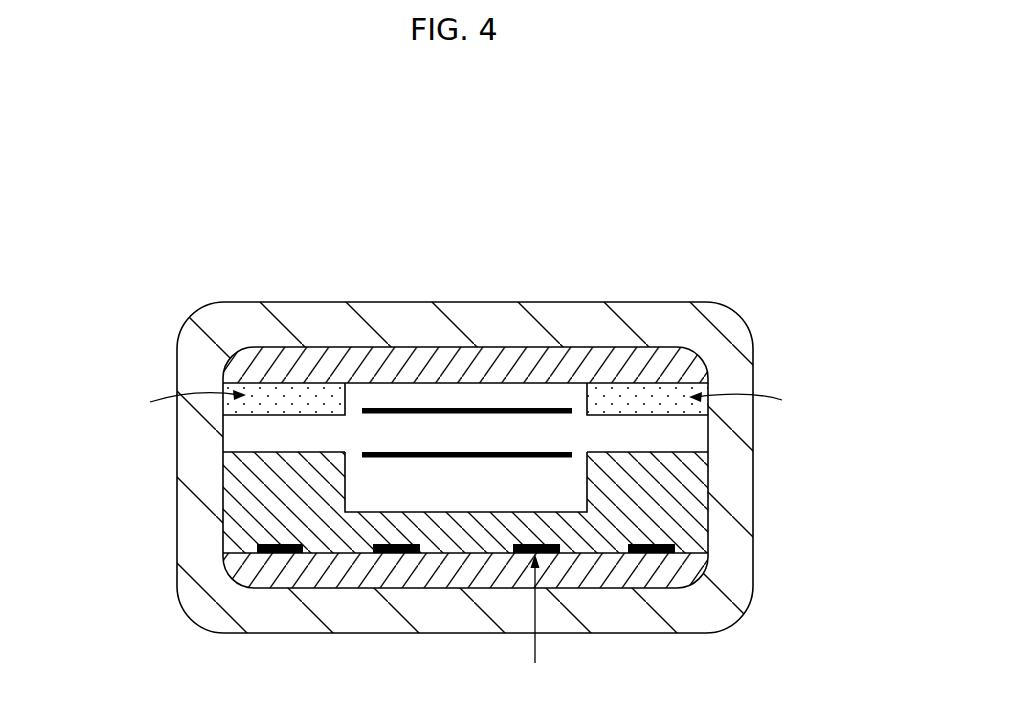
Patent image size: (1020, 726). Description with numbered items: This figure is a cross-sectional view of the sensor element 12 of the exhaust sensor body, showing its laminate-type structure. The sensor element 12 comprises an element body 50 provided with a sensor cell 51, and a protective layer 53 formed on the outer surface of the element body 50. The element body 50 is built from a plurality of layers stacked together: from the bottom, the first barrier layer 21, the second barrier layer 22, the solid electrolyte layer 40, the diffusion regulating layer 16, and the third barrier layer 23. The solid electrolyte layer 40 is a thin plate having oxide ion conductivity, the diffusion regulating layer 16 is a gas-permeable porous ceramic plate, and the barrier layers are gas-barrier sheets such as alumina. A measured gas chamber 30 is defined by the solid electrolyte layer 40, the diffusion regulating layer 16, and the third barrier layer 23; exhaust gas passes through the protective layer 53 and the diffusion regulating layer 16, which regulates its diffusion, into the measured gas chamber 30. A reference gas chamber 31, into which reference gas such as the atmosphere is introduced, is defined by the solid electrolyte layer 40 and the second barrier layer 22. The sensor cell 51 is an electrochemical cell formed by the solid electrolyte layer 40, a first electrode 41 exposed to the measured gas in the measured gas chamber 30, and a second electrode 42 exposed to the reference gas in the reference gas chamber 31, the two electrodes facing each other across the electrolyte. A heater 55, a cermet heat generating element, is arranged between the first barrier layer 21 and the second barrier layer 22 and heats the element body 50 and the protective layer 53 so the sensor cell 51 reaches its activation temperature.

The sensor element 12 is at (755, 200).
The diffusion regulating layer 16 is at (278, 392).
The first barrier layer 21 is at (468, 568).
The second barrier layer 22 is at (693, 522).
The third barrier layer 23 is at (313, 363).
The measured gas chamber 30 is at (465, 322).
The reference gas chamber 31 is at (362, 474).
The solid electrolyte layer 40 is at (413, 433).
The first electrode 41 is at (361, 404).
The second electrode 42 is at (447, 450).
The element body 50 is at (223, 532).
The sensor cell 51 is at (463, 240).
The protective layer 53 is at (267, 612).
The heater 55 is at (295, 554).